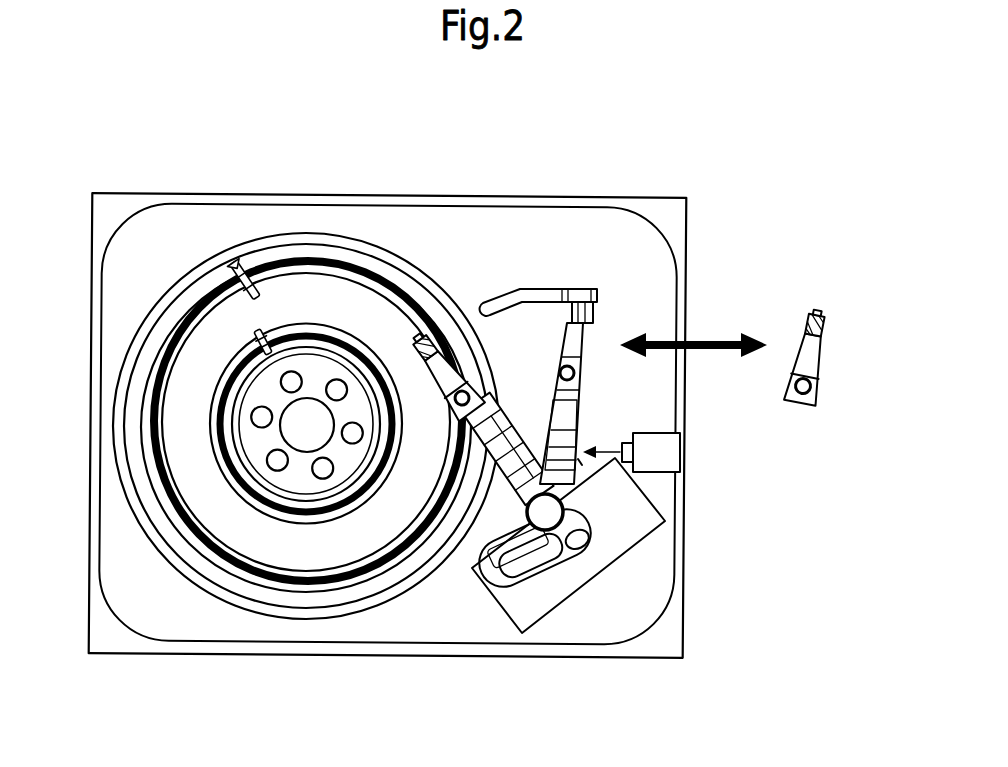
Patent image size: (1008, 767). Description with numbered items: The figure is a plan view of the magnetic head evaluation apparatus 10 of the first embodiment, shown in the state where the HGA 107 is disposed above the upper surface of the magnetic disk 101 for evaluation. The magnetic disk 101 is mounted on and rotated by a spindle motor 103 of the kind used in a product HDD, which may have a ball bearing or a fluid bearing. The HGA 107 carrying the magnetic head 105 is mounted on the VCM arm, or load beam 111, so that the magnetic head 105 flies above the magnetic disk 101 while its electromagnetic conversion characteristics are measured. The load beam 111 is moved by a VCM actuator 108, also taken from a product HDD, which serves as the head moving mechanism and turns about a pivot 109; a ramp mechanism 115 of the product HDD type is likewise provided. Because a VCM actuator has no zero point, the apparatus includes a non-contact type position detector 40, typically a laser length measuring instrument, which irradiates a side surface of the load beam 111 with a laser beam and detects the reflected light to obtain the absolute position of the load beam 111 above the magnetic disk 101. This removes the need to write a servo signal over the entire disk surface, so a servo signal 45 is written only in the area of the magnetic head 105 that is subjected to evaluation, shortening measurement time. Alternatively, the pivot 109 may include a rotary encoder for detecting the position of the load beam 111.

The magnetic head evaluation apparatus 10 is at (184, 158).
The magnetic disk 101 is at (315, 236).
The spindle motor 103 is at (252, 440).
The magnetic head 105 is at (421, 337).
The HGA 107 is at (443, 368).
The VCM actuator 108 is at (607, 520).
The pivot 109 is at (543, 512).
The VCM arm (load beam) 111 is at (486, 368).
The ramp mechanism 115 is at (511, 289).
The non-contact type position detector 40 is at (662, 453).
The servo signal 45 is at (257, 338).